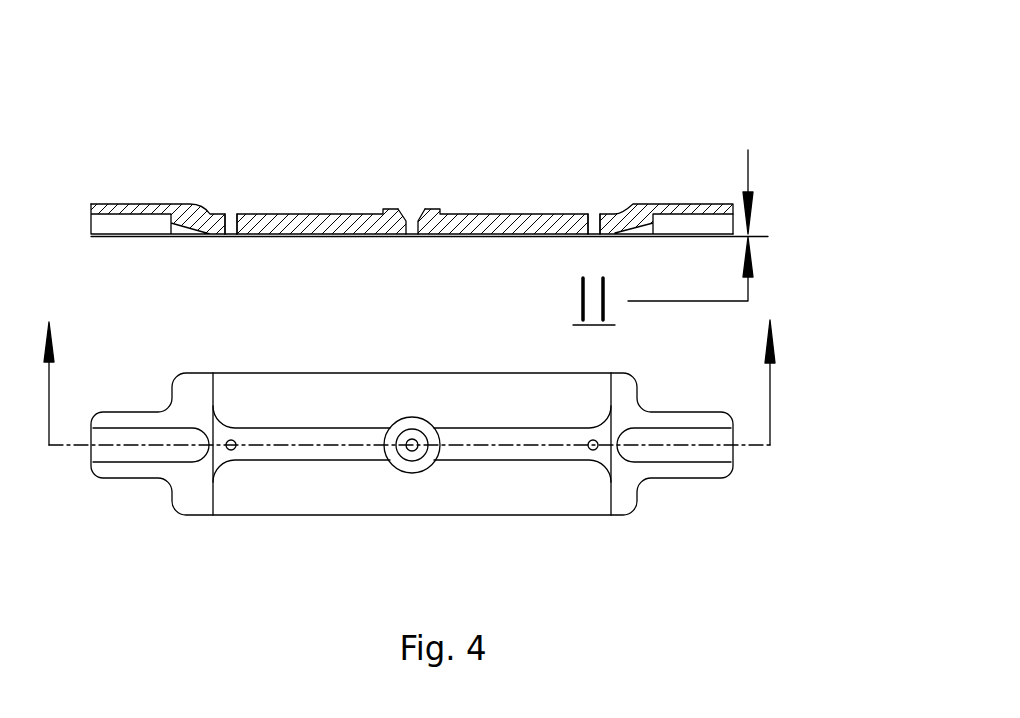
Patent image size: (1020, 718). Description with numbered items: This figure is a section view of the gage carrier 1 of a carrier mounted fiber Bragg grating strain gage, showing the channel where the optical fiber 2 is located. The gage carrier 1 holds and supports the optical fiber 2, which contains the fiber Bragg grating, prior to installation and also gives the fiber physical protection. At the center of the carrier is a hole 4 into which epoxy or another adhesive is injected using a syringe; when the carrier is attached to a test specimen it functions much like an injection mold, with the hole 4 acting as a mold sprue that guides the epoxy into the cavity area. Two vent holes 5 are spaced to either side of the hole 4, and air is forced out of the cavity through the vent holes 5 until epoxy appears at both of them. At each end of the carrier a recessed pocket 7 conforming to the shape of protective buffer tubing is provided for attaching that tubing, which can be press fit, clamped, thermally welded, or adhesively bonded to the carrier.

The gage carrier 1 is at (166, 182).
The optical fiber 2 is at (763, 232).
The hole 4 is at (413, 209).
The vent holes 5 is at (232, 218).
The recessed pocket 7 is at (132, 448).